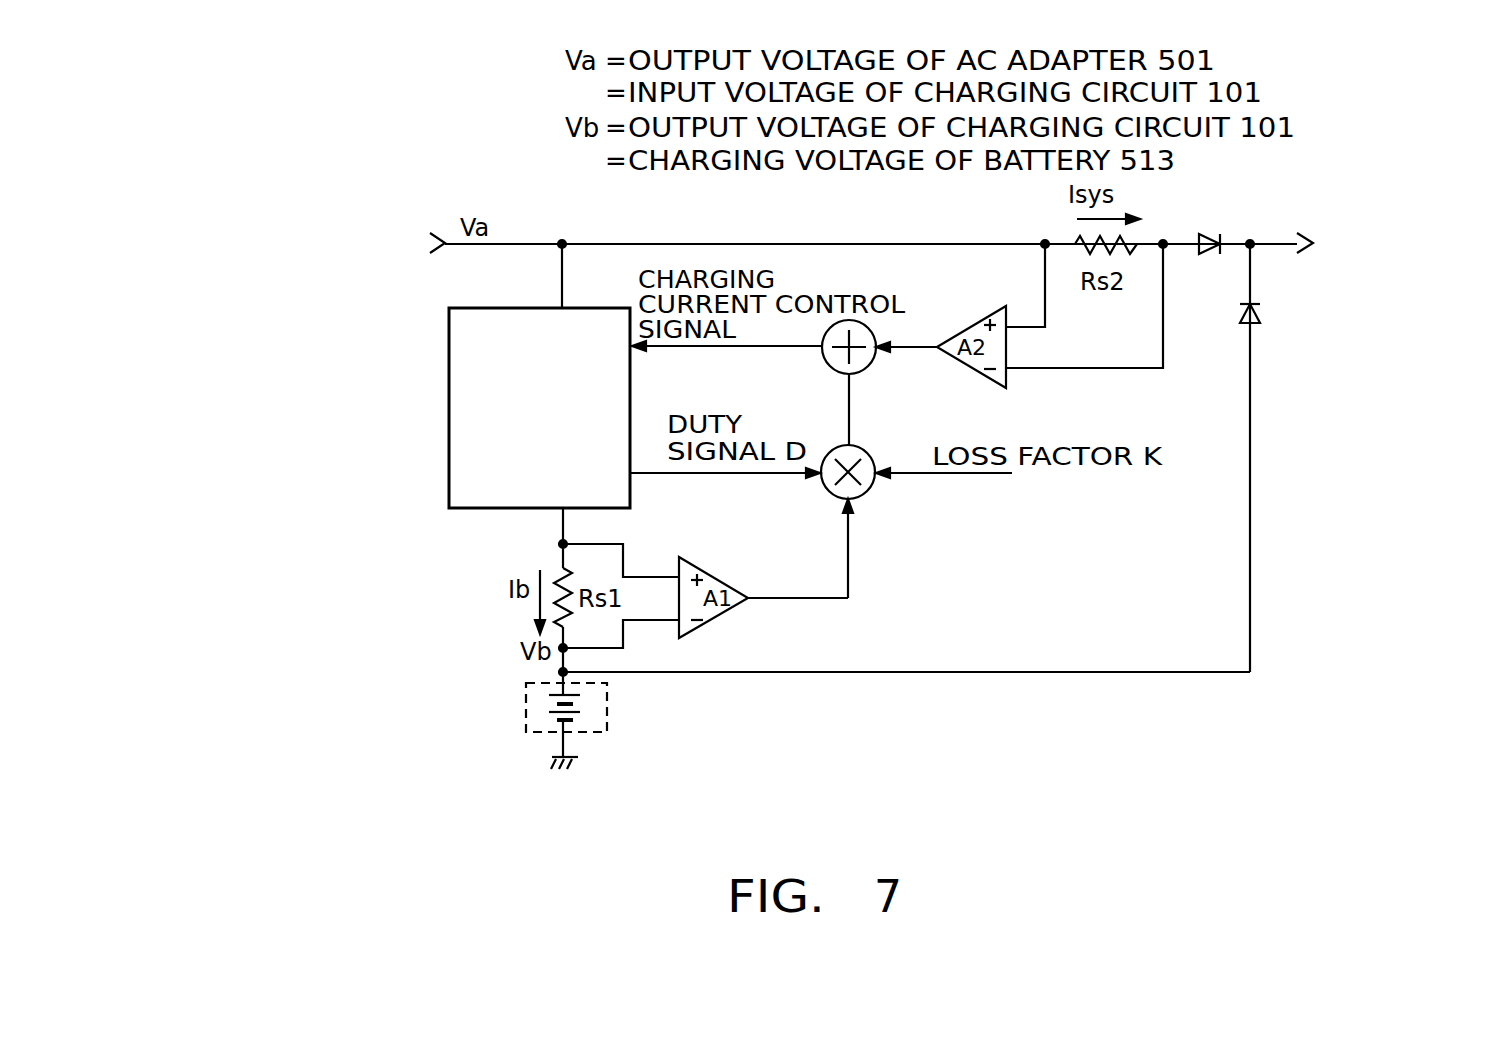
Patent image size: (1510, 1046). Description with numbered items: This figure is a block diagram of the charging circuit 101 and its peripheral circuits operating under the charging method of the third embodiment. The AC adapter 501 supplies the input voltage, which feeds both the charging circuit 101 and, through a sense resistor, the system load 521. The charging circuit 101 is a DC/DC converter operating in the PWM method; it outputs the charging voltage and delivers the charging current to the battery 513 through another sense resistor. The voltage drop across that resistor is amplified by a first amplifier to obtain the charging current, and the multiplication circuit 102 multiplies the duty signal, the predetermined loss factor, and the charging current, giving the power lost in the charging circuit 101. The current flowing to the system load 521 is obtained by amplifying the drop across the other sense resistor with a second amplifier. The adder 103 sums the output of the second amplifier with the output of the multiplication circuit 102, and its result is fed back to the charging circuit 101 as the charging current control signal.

The charging circuit 101 is at (448, 357).
The multiplication circuit 102 is at (866, 492).
The adder 103 is at (869, 366).
The AC adapter 501 is at (287, 250).
The battery 513 is at (607, 730).
The system load 521 is at (1404, 252).